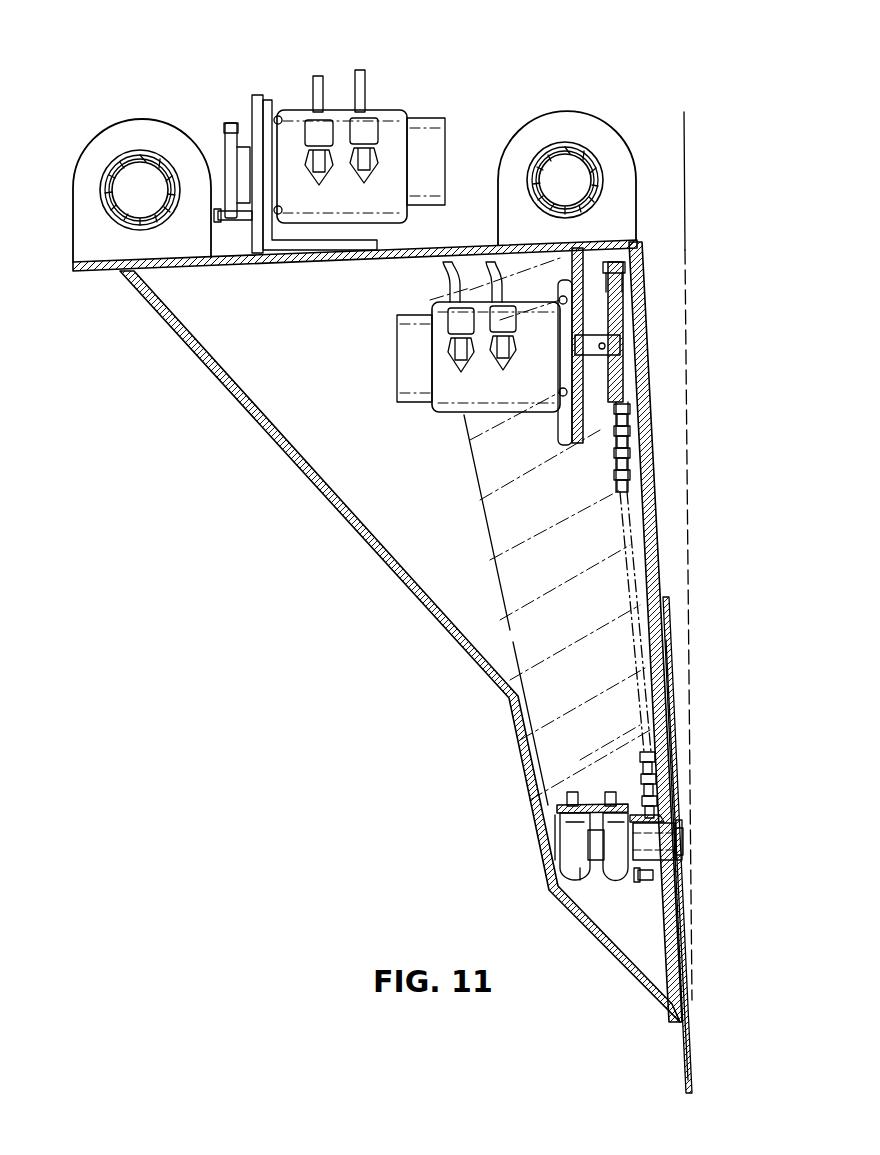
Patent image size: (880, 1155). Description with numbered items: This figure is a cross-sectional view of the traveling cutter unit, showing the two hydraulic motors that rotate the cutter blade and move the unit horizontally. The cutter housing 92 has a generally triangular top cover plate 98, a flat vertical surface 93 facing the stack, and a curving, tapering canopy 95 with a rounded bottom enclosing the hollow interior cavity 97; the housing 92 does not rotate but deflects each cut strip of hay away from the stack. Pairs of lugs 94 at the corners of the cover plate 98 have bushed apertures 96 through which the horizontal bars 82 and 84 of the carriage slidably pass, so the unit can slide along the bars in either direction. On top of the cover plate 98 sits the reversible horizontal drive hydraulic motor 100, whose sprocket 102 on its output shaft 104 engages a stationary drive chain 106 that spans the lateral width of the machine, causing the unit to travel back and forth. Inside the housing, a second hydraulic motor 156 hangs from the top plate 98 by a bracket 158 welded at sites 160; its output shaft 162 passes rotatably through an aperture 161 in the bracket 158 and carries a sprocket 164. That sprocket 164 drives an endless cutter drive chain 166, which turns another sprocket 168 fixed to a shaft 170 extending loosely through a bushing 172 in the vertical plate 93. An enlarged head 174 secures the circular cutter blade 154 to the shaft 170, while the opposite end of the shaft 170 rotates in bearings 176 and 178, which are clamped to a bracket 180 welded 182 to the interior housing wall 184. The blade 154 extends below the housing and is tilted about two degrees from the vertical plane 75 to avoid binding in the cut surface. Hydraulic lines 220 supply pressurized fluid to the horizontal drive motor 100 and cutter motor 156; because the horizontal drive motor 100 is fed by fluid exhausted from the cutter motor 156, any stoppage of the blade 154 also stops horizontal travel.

The vertical plane 75 is at (692, 658).
The horizontal bar 82 is at (124, 156).
The horizontal bar 84 is at (578, 142).
The cutter housing 92 is at (696, 216).
The flat vertical surface 93 is at (652, 540).
The lug 94 is at (152, 141).
The canopy 95 is at (224, 394).
The aperture 96 is at (160, 160).
The hollow interior cavity 97 is at (292, 442).
The top cover plate 98 is at (445, 243).
The horizontal drive hydraulic motor 100 is at (402, 112).
The sprocket 102 is at (230, 122).
The output shaft 104 is at (258, 97).
The stationary drive chain 106 is at (236, 130).
The cutter blade 154 is at (686, 1034).
The second hydraulic motor 156 is at (438, 414).
The bracket 158 is at (570, 432).
The weld site 160 is at (576, 250).
The aperture 161 is at (626, 290).
The output shaft 162 is at (622, 346).
The sprocket 164 is at (625, 384).
The endless cutter drive chain 166 is at (632, 452).
The sprocket 168 is at (646, 882).
The shaft 170 is at (684, 843).
The bushing 172 is at (666, 816).
The enlarged head 174 is at (682, 836).
The bearing 176 is at (566, 862).
The bearing 178 is at (590, 878).
The bracket 180 is at (556, 810).
The weld 182 is at (566, 802).
The interior housing wall 184 is at (600, 596).
The hydraulic lines 220 is at (356, 70).